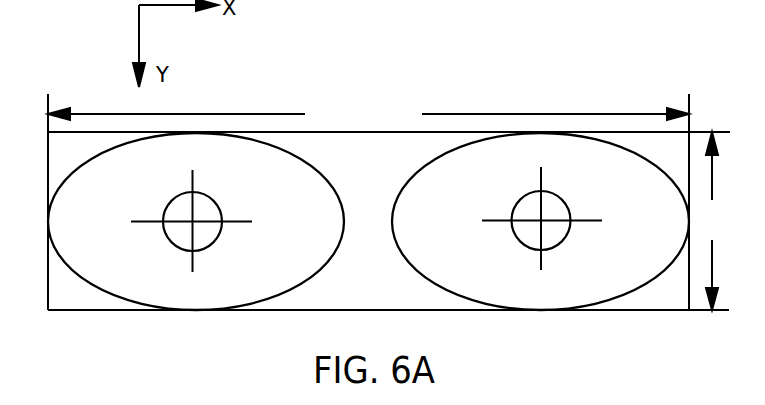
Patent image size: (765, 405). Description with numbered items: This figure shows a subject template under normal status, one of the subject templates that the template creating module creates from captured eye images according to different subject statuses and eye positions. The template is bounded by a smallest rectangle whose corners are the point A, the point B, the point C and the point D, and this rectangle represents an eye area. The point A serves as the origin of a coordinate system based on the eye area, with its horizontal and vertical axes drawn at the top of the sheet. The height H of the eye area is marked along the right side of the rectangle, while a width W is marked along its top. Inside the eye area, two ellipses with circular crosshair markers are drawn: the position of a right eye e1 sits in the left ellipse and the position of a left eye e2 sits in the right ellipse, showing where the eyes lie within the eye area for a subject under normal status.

The position of a right eye e1 is at (193, 221).
The position of a left eye e2 is at (541, 220).
The width dimension W is at (368, 113).
The height of the eye area H is at (712, 221).
The point A is at (32, 130).
The point B is at (32, 303).
The point C is at (676, 297).
The point D is at (674, 149).